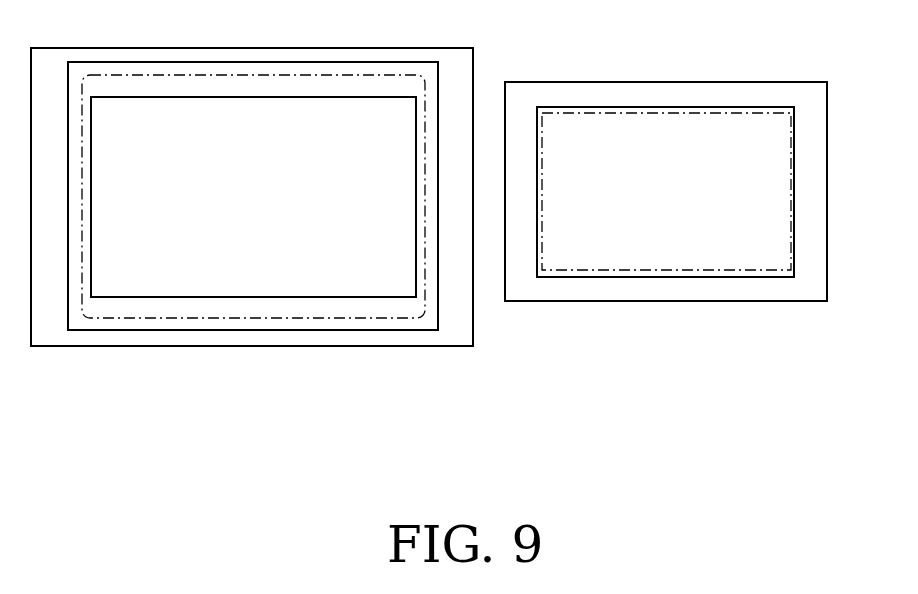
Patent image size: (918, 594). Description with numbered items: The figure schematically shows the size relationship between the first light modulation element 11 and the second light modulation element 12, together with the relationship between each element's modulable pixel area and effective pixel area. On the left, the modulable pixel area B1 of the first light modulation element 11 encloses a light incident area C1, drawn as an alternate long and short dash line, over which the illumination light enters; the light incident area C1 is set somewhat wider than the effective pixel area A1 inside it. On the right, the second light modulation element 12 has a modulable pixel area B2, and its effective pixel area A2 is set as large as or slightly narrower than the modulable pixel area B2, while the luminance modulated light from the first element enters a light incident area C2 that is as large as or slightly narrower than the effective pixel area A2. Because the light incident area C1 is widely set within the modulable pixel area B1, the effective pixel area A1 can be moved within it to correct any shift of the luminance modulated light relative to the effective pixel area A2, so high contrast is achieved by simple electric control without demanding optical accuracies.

The first light modulation element 11 is at (172, 48).
The modulable pixel area B1 is at (277, 62).
The light incident area C1 is at (388, 75).
The effective pixel area A1 is at (253, 197).
The second light modulation element 12 is at (675, 82).
The light incident area C2 is at (577, 107).
The effective pixel area A2 is at (676, 197).
The modulable pixel area B2 is at (665, 192).